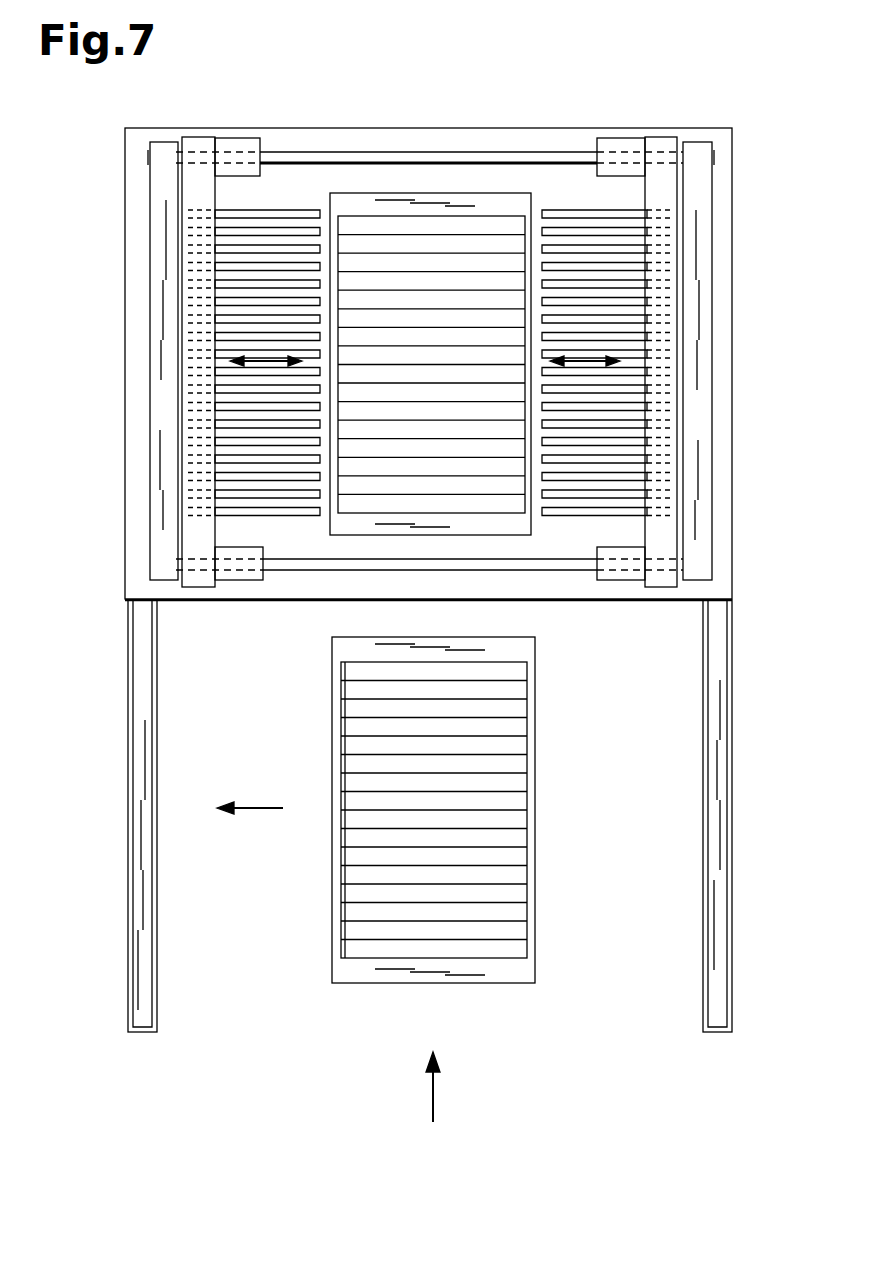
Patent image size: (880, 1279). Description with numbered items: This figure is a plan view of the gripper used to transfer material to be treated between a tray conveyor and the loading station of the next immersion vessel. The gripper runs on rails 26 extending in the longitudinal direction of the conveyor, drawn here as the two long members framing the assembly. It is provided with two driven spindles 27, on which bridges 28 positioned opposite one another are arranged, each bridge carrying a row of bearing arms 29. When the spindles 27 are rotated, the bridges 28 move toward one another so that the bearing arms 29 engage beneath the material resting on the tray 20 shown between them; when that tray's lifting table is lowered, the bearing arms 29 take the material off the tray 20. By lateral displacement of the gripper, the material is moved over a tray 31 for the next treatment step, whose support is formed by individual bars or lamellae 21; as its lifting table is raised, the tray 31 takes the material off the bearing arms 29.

The tray 20 is at (358, 207).
The bars or lamellae 21 is at (370, 935).
The rails 26 is at (137, 880).
The driven spindles 27 is at (413, 157).
The bridges 28 is at (660, 190).
The bearing arms 29 is at (262, 217).
The tray 31 is at (487, 970).